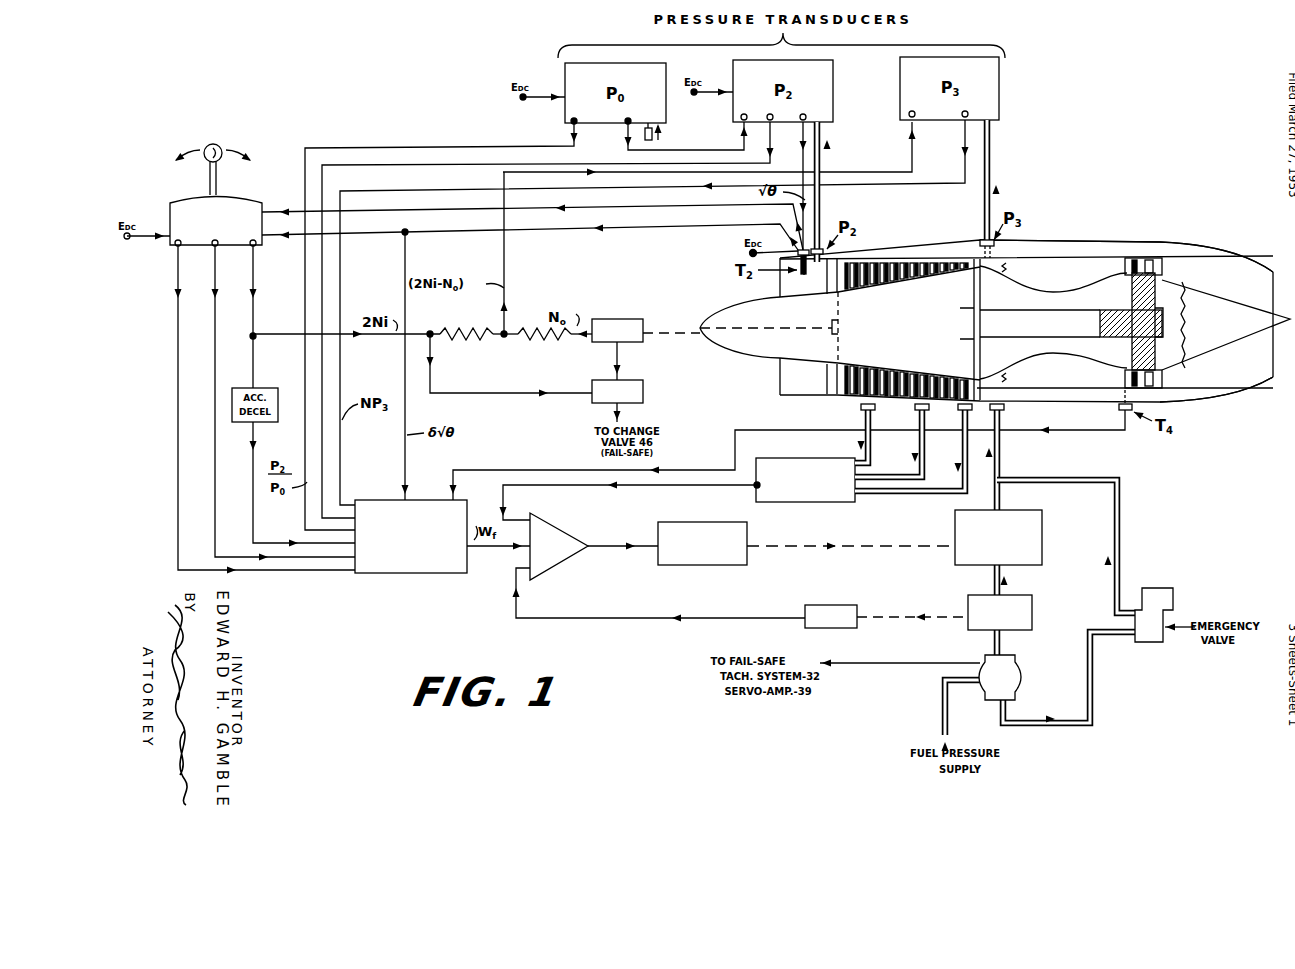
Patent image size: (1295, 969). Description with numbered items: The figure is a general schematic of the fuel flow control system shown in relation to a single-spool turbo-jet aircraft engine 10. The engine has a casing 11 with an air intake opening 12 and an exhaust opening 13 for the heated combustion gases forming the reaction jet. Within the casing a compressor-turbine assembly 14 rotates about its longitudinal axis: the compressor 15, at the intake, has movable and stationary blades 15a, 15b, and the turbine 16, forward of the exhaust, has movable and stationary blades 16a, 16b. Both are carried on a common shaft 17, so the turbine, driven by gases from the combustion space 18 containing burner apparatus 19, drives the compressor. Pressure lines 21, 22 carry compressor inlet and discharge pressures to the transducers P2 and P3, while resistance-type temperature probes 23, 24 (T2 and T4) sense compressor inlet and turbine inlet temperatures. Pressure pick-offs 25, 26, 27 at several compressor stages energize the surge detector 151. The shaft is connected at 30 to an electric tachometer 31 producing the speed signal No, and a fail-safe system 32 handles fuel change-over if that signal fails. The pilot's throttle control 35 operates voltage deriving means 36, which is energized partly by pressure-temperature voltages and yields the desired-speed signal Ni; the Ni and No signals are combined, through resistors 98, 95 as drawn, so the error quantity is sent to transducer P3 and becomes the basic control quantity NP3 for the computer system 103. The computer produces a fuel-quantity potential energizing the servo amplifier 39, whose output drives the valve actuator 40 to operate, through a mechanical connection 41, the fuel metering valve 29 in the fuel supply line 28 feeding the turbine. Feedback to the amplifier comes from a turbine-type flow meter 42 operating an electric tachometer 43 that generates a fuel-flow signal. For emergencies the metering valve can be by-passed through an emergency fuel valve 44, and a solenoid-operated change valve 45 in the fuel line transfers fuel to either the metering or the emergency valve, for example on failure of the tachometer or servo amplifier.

The turbo-jet aircraft engine 10 is at (1026, 304).
The casing 11 is at (1060, 245).
The air intake opening 12 is at (788, 363).
The exhaust opening 13 is at (1273, 272).
The compressor-turbine assembly 14 is at (1053, 279).
The compressor 15 is at (865, 312).
The movable compressor blades 15a is at (880, 266).
The stationary compressor blades 15b is at (931, 265).
The turbine 16 is at (1169, 303).
The movable turbine blades 16a is at (1134, 258).
The stationary turbine blades 16b is at (1150, 258).
The common shaft 17 is at (1114, 312).
The combustion space 18 is at (1053, 367).
The burner apparatus 19 is at (1010, 269).
The pressure line 21 is at (823, 198).
The pressure line 22 is at (995, 150).
The temperature probe 23 is at (809, 270).
The temperature probe 24 is at (1126, 386).
The surge pressure pick-off 25 is at (861, 417).
The surge pressure pick-off 26 is at (918, 450).
The surge pressure pick-off 27 is at (963, 458).
The fuel supply line 28 is at (1004, 446).
The fuel metering valve 29 is at (955, 558).
The speed pick-off connection 30 is at (680, 322).
The electric tachometer 31 is at (628, 314).
The fail-safe system 32 is at (645, 390).
The throttle control 35 is at (220, 146).
The throttle voltage deriving means 36 is at (188, 197).
The servo amplifier 39 is at (560, 524).
The valve actuator 40 is at (706, 566).
The mechanical connection 41 is at (872, 548).
The flow meter 42 is at (1032, 603).
The electric tachometer 43 is at (822, 604).
The emergency fuel valve 44 is at (1153, 590).
The change valve 45 is at (1014, 660).
The resistor 95 is at (547, 345).
The resistor 98 is at (464, 345).
The computer system 103 is at (387, 576).
The surge detector 151 is at (793, 504).